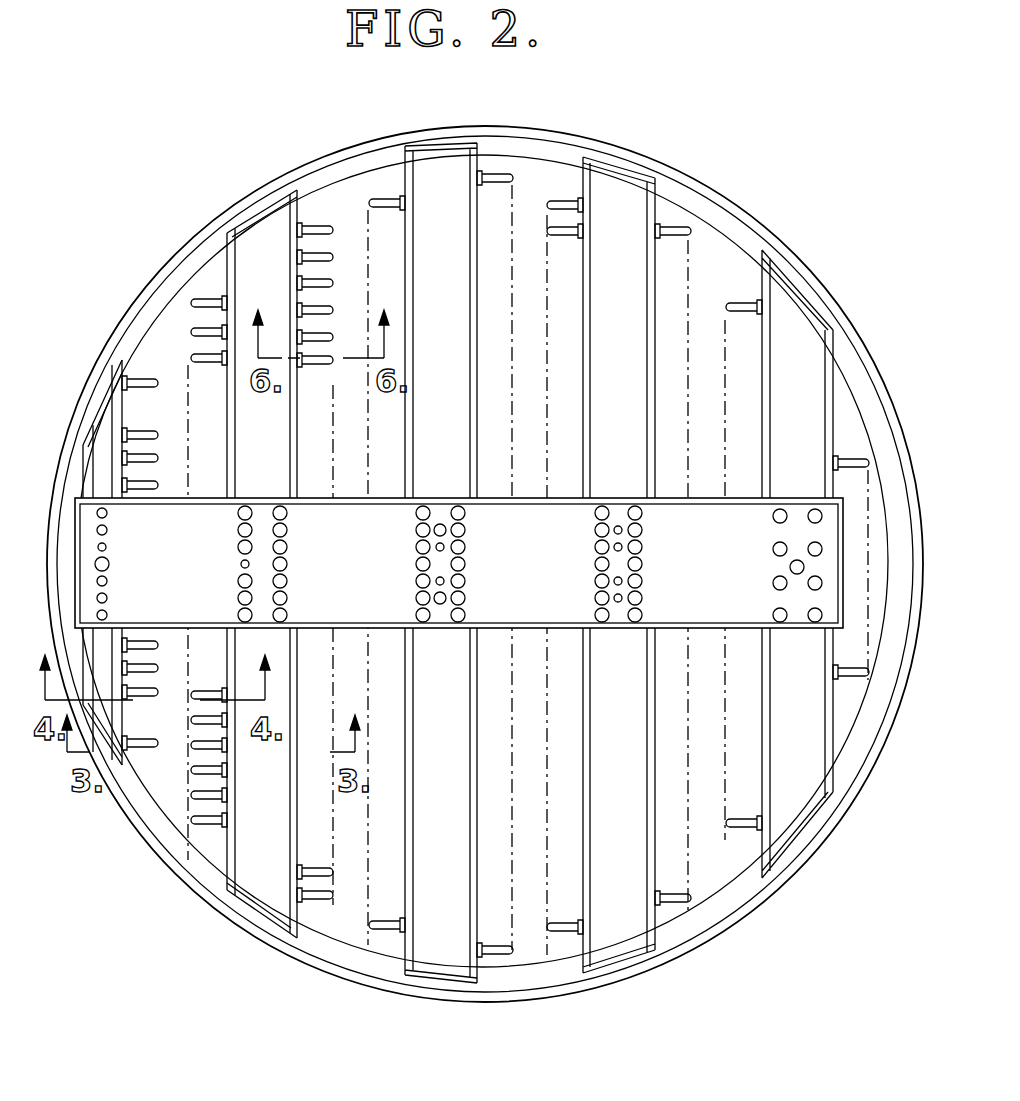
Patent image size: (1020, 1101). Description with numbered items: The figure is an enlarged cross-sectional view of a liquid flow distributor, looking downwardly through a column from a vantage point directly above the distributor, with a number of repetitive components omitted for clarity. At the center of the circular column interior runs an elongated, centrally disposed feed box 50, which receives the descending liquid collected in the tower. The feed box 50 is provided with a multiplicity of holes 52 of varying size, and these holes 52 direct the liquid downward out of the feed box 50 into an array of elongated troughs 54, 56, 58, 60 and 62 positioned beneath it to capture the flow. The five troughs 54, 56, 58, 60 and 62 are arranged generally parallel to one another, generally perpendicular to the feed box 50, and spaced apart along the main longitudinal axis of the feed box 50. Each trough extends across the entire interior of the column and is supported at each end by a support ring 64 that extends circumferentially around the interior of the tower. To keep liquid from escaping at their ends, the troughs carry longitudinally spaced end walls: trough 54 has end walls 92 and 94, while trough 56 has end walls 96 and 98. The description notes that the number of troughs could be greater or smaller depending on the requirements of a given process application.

The feed box 50 is at (712, 618).
The holes 52 is at (102, 548).
The trough 54 is at (110, 432).
The trough 56 is at (262, 224).
The trough 58 is at (441, 162).
The trough 60 is at (630, 187).
The trough 62 is at (808, 323).
The support ring 64 is at (852, 398).
The end wall 92 is at (100, 398).
The end wall 94 is at (108, 732).
The end wall 96 is at (279, 207).
The end wall 98 is at (255, 912).